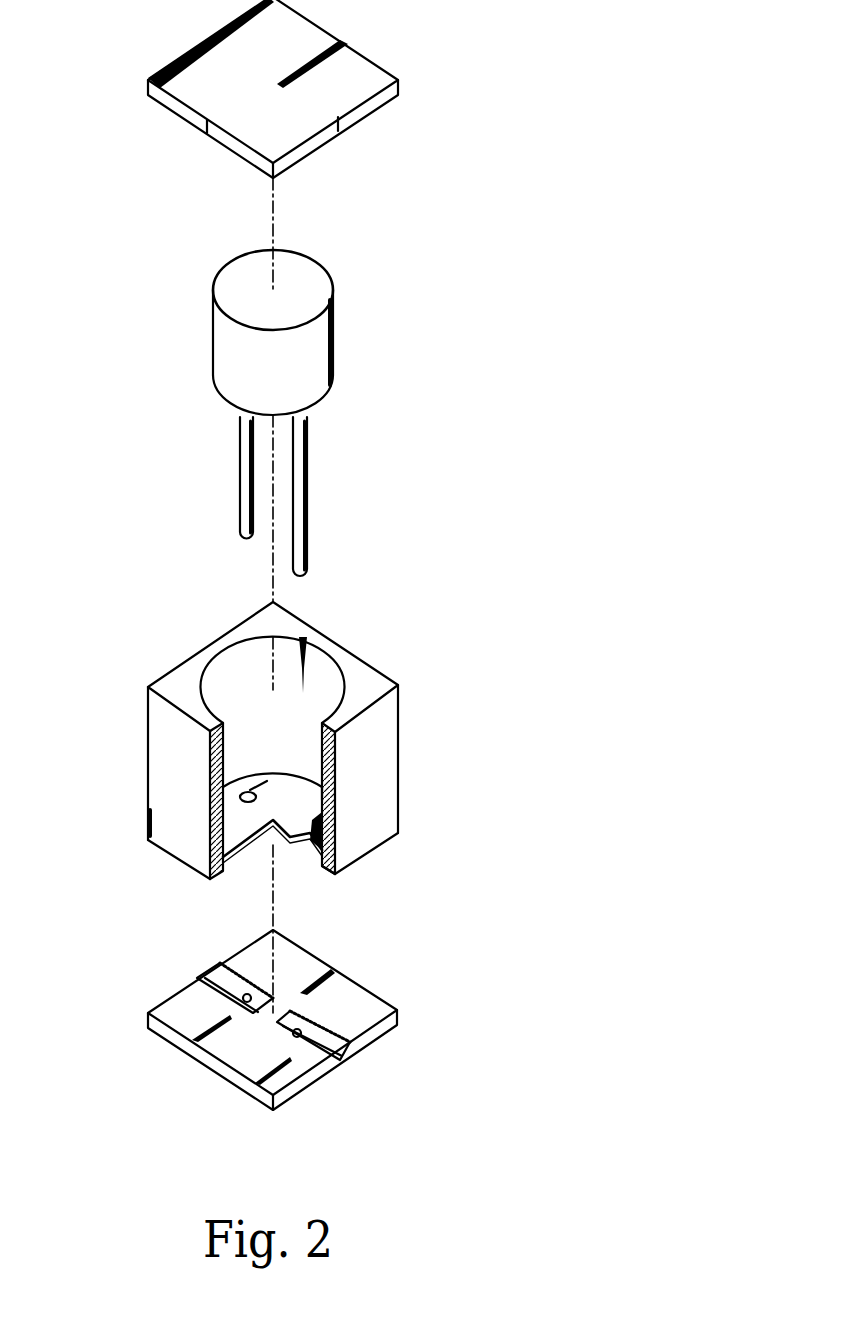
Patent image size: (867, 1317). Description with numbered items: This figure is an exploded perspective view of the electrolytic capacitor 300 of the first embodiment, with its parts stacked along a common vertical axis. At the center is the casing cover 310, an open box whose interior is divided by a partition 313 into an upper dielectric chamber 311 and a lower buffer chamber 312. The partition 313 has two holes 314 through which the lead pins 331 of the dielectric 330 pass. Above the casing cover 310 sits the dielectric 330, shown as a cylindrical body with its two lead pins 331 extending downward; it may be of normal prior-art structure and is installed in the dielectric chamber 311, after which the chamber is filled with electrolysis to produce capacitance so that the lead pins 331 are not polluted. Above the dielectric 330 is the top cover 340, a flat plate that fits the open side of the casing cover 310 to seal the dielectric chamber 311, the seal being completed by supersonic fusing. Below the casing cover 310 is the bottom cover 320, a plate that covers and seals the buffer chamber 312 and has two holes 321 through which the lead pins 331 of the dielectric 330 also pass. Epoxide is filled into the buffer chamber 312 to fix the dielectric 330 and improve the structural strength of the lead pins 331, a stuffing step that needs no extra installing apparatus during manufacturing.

The electrolytic capacitor 300 is at (446, 385).
The casing cover 310 is at (385, 758).
The dielectric chamber 311 is at (322, 662).
The buffer chamber 312 is at (322, 867).
The partition 313 is at (194, 837).
The holes 314 is at (95, 796).
The bottom cover 320 is at (325, 1020).
The holes 321 is at (360, 1042).
The dielectric 330 is at (313, 332).
The lead pins 331 is at (307, 427).
The top cover 340 is at (357, 63).